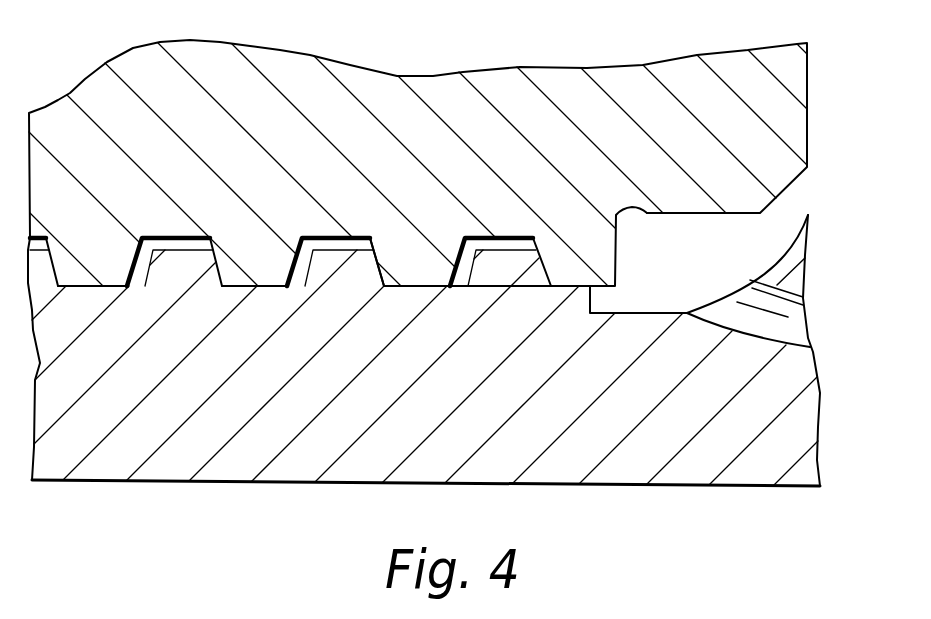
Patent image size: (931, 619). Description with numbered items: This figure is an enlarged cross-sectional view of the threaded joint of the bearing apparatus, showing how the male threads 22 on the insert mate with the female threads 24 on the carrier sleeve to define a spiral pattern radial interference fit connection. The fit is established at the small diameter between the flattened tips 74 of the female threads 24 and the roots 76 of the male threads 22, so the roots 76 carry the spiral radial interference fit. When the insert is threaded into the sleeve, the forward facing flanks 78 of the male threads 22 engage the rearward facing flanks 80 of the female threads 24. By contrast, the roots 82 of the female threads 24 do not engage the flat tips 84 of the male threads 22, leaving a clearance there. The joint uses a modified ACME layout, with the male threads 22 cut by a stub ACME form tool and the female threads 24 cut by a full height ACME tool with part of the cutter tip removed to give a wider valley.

The male threads 22 is at (439, 407).
The female threads 24 is at (299, 188).
The flattened tips 74 is at (437, 287).
The roots 76 is at (384, 262).
The forward facing flanks 78 is at (413, 285).
The rearward facing flanks 80 is at (380, 272).
The roots 82 is at (297, 238).
The flat tips 84 is at (345, 237).